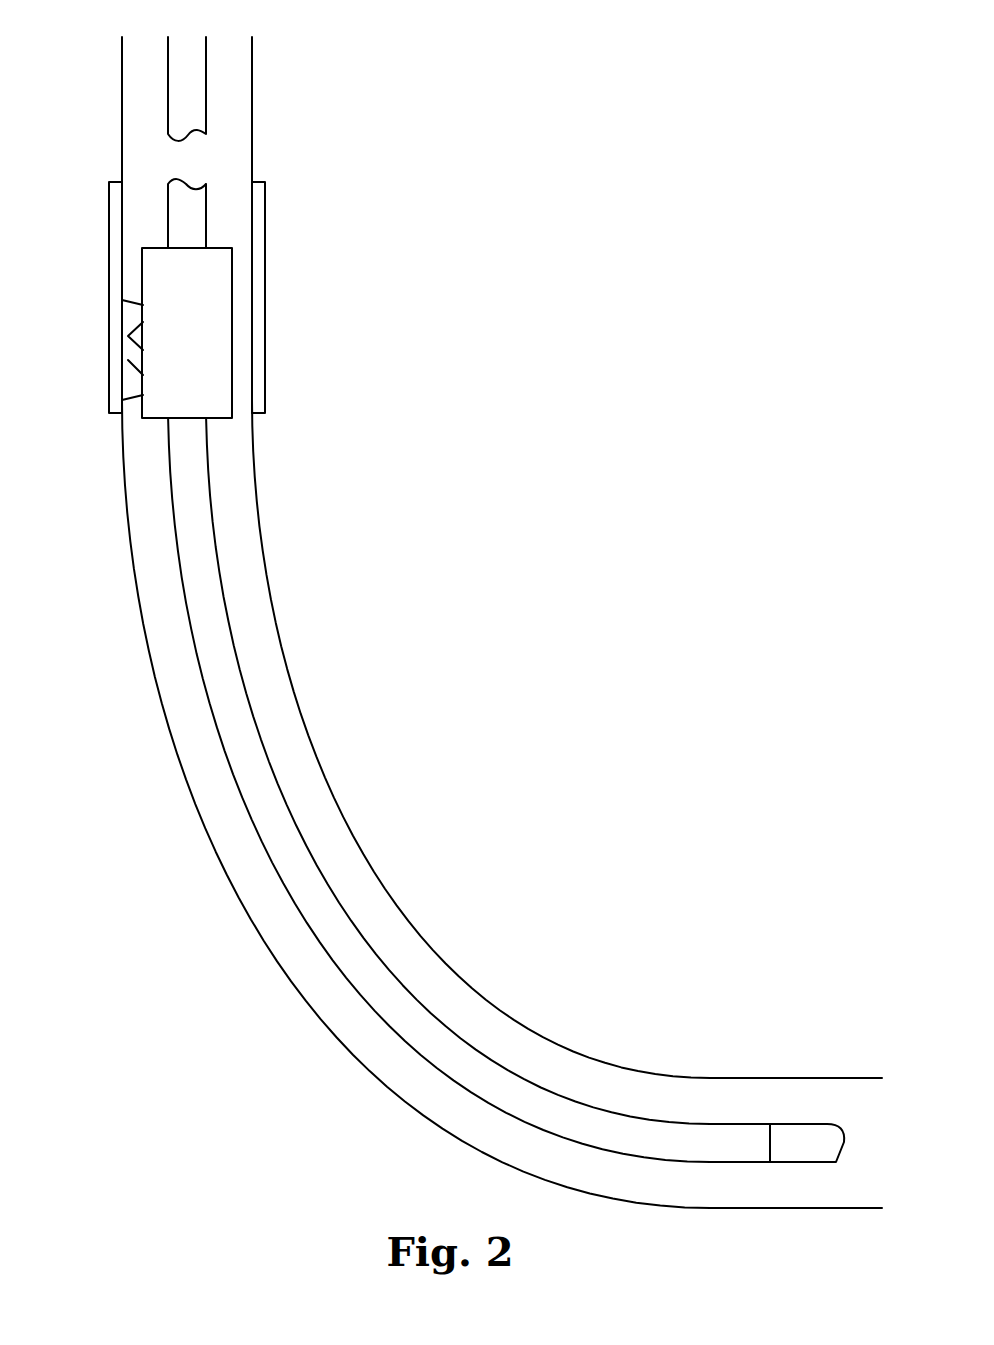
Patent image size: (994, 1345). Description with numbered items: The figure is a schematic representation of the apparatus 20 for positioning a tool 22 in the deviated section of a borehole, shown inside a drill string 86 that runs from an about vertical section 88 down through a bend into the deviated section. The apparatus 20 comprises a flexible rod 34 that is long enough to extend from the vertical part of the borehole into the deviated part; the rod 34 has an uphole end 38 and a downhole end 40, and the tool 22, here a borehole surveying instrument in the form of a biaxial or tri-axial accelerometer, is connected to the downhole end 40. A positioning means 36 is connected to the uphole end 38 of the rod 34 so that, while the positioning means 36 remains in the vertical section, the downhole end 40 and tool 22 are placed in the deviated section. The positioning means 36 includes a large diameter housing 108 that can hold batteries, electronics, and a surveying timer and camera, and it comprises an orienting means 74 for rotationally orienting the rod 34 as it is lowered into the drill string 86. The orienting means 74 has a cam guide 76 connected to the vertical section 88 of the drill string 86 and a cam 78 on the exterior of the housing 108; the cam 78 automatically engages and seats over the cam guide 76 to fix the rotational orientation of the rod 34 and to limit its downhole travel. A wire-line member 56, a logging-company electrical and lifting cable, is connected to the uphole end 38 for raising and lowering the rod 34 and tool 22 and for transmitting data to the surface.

The apparatus 20 is at (488, 740).
The tool 22 is at (812, 1125).
The flexible rod 34 is at (430, 1010).
The positioning means 36 is at (205, 308).
The uphole end 38 is at (193, 479).
The downhole end 40 is at (752, 1143).
The wire-line member 56 is at (193, 215).
The orienting means 74 is at (120, 357).
The cam guide 76 is at (130, 315).
The cam 78 is at (140, 346).
The drill string 86 is at (298, 712).
The vertical section of the drill string 88 is at (258, 100).
The housing 108 is at (193, 288).